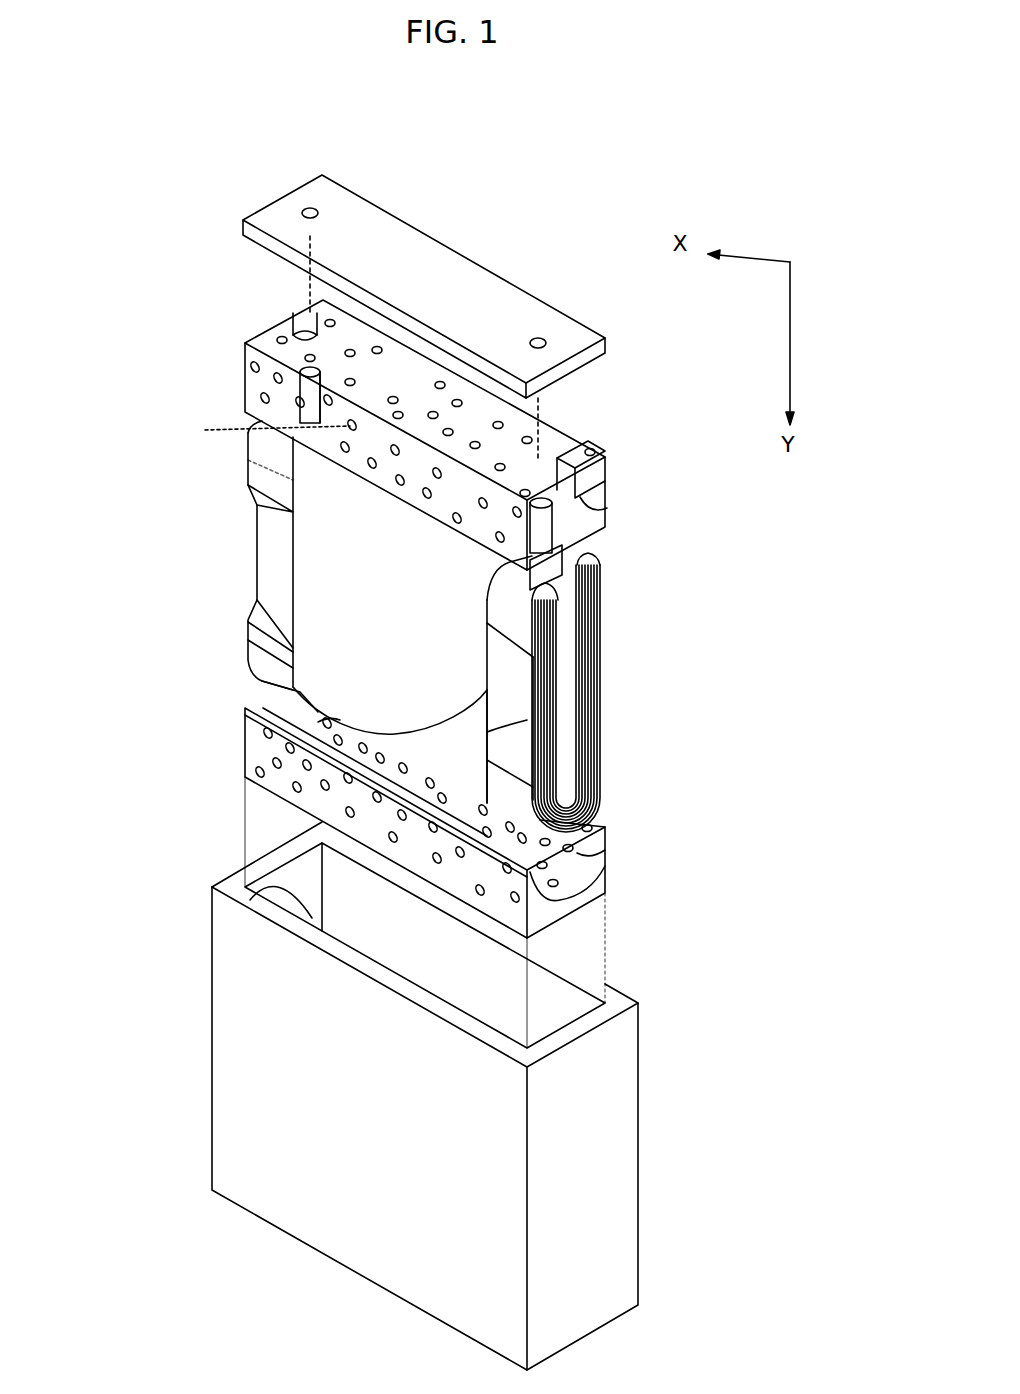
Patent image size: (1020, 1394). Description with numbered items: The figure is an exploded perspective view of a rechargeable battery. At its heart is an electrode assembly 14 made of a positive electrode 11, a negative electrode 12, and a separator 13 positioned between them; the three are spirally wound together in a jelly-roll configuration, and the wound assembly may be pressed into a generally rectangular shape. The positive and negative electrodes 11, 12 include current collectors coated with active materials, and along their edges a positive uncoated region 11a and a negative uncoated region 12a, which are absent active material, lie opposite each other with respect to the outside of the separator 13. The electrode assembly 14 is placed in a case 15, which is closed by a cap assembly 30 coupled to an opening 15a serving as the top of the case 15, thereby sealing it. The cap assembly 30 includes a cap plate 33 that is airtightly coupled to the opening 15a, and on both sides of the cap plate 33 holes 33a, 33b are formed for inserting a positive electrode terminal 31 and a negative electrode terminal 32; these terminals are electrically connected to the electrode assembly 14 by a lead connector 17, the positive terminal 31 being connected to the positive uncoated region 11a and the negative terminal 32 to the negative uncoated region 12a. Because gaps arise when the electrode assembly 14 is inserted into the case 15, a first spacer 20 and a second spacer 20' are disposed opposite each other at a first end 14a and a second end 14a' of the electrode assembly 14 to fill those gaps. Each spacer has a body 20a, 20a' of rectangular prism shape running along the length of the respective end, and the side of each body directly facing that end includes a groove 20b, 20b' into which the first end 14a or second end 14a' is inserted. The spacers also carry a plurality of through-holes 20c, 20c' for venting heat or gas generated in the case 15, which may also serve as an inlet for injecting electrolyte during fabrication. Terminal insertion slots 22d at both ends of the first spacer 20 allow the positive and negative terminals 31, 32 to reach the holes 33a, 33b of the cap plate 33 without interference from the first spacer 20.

The cap assembly 30 is at (488, 219).
The cap plate 33 is at (395, 232).
The hole 33a is at (310, 208).
The hole 33b is at (540, 338).
The positive electrode terminal 31 is at (302, 370).
The negative electrode terminal 32 is at (548, 526).
The first spacer 20 is at (424, 424).
The body 20a is at (492, 408).
The groove 20b is at (639, 477).
The through-holes 20c is at (310, 450).
The terminal insertion slots 22d is at (300, 326).
The electrode assembly 14 is at (382, 629).
The first end 14a is at (250, 429).
The second end 14a' is at (250, 694).
The positive electrode 11 is at (248, 631).
The positive uncoated region 11a is at (250, 466).
The negative electrode 12 is at (296, 557).
The negative uncoated region 12a is at (548, 592).
The separator 13 is at (527, 720).
The lead connector 17 is at (572, 697).
The second spacer 20' is at (387, 878).
The body 20a' is at (305, 792).
The groove 20b' is at (610, 863).
The through-holes 20c' is at (331, 809).
The case 15 is at (628, 1098).
The opening 15a is at (250, 902).